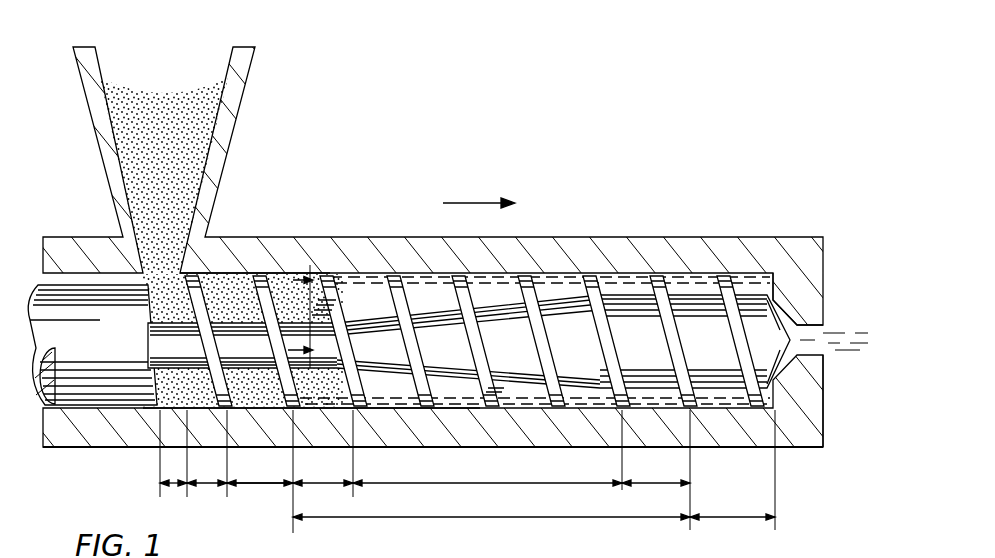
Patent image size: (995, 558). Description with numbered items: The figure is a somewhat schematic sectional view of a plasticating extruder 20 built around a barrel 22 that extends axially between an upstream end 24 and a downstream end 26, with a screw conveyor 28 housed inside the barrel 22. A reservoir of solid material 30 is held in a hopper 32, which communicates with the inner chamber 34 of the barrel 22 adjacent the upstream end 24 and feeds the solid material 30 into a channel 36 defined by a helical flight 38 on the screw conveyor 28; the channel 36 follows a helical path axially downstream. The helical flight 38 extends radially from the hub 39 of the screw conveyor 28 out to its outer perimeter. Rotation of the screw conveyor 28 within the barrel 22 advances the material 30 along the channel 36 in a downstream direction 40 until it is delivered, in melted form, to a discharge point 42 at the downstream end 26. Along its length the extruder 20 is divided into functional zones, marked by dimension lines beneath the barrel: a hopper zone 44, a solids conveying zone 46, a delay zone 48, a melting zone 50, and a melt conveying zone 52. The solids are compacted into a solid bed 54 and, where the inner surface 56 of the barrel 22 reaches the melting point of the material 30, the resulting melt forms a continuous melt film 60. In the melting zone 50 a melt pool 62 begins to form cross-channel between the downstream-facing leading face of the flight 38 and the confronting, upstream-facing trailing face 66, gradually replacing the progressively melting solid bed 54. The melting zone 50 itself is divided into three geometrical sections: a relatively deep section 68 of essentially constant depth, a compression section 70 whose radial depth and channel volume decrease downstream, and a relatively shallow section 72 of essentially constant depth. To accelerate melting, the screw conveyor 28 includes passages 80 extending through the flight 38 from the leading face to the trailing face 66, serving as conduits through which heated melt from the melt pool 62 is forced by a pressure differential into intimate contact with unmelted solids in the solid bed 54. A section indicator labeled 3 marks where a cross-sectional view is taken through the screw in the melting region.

The section line 3- 3 is at (301, 324).
The plasticating extruder 20 is at (409, 284).
The barrel 22 is at (542, 246).
The upstream end 24 is at (43, 432).
The downstream end 26 is at (823, 383).
The screw conveyor 28 is at (747, 291).
The solid material 30 is at (166, 100).
The hopper 32 is at (240, 110).
The inner chamber 34 is at (178, 393).
The channel 36 is at (282, 272).
The helical flight 38 is at (313, 300).
The hub 39 is at (165, 338).
The downstream direction 40 is at (465, 200).
The discharge point 42 is at (815, 330).
The hopper zone 44 is at (172, 489).
The solids conveying zone 46 is at (206, 488).
The delay zone 48 is at (260, 488).
The melting zone 50 is at (478, 515).
The melt conveying zone 52 is at (748, 516).
The solid bed 54 is at (372, 282).
The inner surface 56 is at (253, 400).
The melt film 60 is at (316, 312).
The melt pool 62 is at (378, 418).
The trailing face 66 is at (246, 307).
The deep section 68 is at (321, 488).
The compression section 70 is at (544, 481).
The shallow section 72 is at (664, 481).
The passages 80 is at (322, 304).